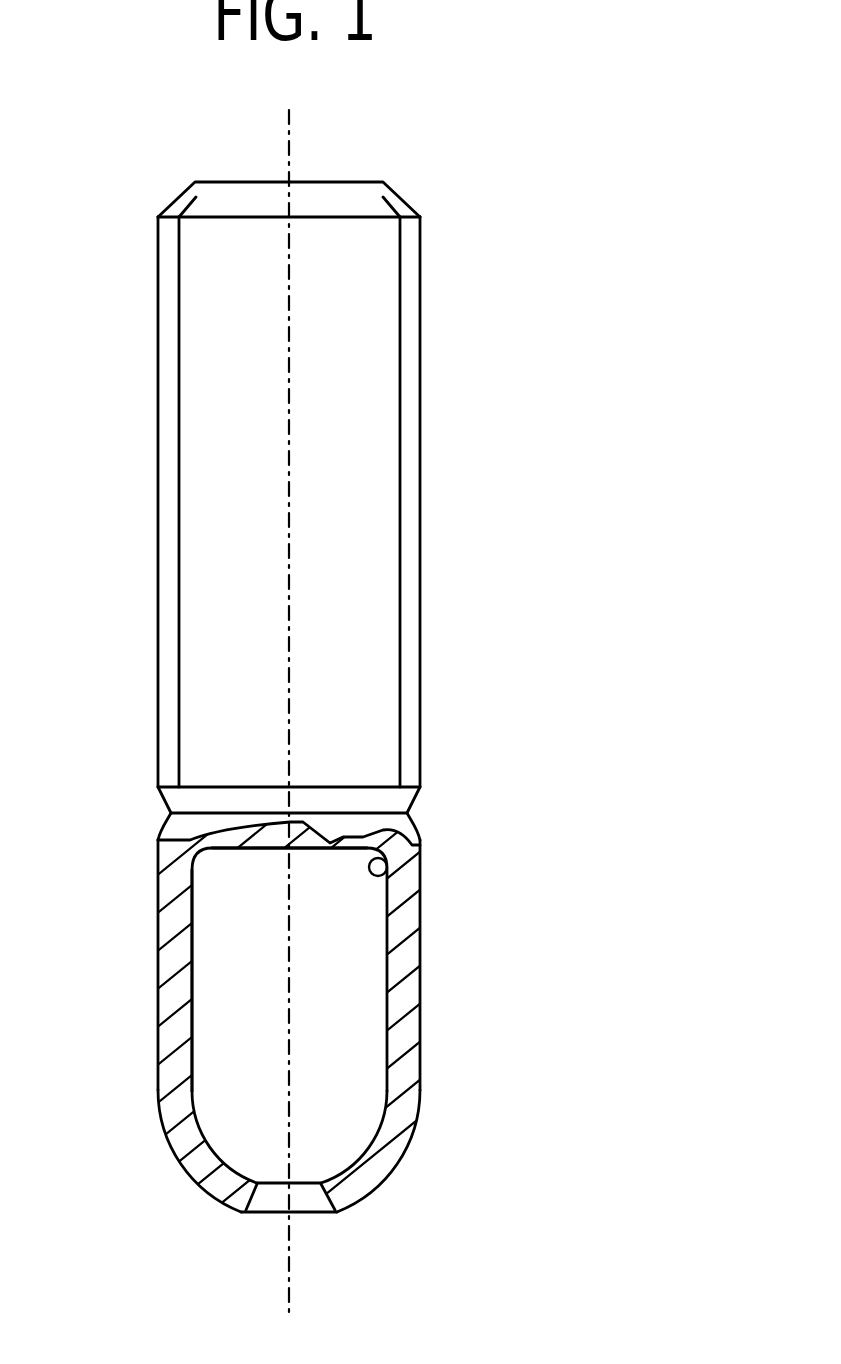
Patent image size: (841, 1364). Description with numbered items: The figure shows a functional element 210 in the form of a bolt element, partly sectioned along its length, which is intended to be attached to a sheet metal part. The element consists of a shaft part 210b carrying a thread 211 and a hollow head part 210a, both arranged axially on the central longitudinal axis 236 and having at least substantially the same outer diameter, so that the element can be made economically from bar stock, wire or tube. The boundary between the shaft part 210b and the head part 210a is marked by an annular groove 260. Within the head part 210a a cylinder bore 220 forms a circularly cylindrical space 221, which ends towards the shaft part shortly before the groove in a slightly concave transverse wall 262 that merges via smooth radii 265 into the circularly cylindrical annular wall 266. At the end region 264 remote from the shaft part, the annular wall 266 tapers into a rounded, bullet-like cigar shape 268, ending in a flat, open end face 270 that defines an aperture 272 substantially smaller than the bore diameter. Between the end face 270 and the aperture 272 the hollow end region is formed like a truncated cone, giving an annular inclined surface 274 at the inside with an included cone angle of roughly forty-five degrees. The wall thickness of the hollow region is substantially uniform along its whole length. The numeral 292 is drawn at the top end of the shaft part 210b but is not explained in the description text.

The functional element 210 is at (445, 478).
The head part 210a is at (545, 966).
The shaft part 210b is at (205, 487).
The thread 211 is at (403, 318).
The cylinder bore 220 is at (195, 1036).
The circularly cylindrical space 221 is at (363, 1036).
The central longitudinal axis 236 is at (293, 1268).
The annular groove 260 is at (409, 824).
The transverse wall 262 is at (312, 854).
The end region 264 is at (185, 1175).
The smooth radii 265 is at (410, 866).
The annular wall 266 is at (161, 962).
The cigar shape 268 is at (388, 1186).
The end face 270 is at (282, 1218).
The aperture 272 is at (312, 1218).
The annular inclined surface 274 is at (258, 1220).
The top end face 292 is at (368, 183).